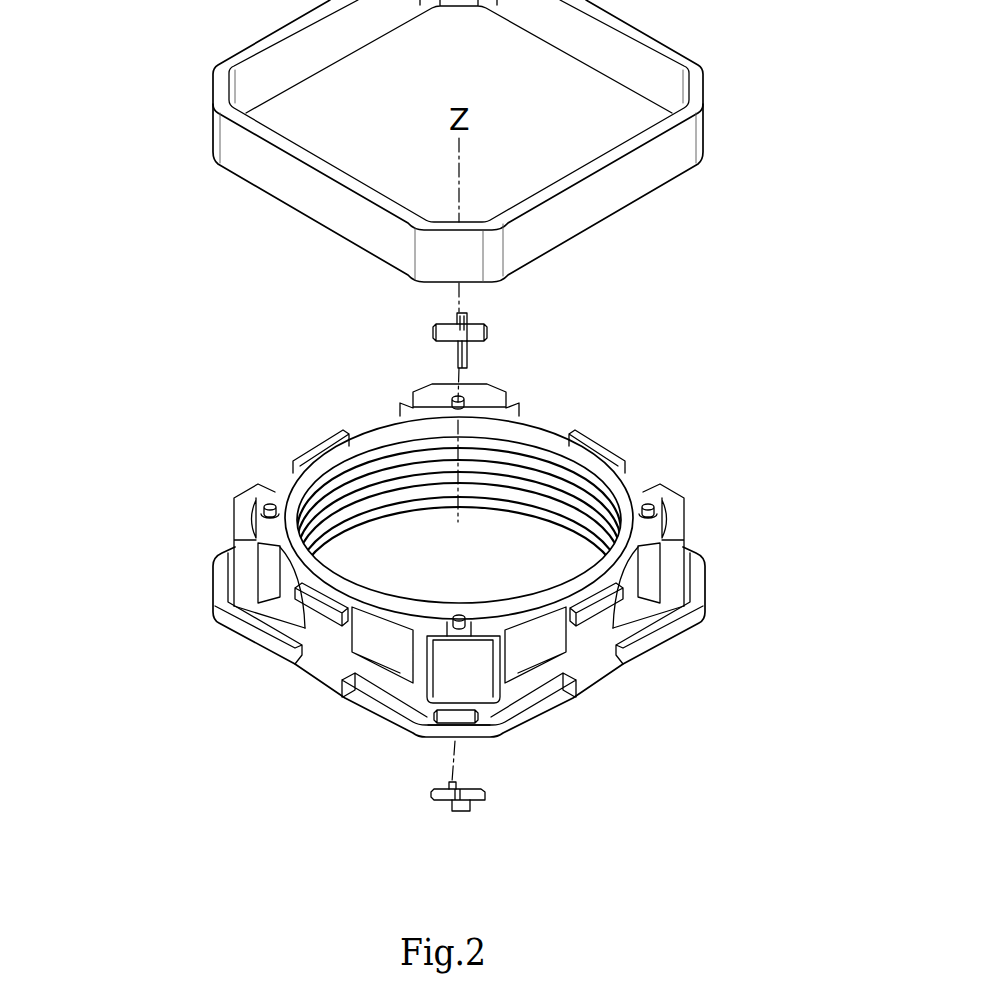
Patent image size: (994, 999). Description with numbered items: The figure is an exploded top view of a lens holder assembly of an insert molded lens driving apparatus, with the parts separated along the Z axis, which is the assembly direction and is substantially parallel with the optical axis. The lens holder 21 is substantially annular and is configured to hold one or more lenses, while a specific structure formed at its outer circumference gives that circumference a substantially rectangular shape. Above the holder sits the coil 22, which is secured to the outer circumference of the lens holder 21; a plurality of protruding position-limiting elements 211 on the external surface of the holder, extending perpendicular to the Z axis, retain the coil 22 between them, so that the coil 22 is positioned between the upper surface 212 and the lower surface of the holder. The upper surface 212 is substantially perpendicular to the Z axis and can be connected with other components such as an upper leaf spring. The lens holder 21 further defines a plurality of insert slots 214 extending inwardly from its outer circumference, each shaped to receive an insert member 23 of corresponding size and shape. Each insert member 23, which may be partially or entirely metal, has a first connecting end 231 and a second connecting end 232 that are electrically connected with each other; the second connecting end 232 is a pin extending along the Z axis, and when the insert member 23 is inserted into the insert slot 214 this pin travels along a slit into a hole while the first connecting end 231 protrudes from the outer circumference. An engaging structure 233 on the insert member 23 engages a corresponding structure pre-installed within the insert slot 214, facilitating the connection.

The lens holder 21 is at (437, 570).
The position-limiting elements 211 is at (220, 598).
The upper surface 212 is at (262, 495).
The insert slots 214 is at (465, 722).
The coil 22 is at (583, 218).
The insert member 23 is at (465, 579).
The first connecting end 231 is at (465, 313).
The second connecting end 232 is at (467, 349).
The engaging structure 233 is at (457, 339).